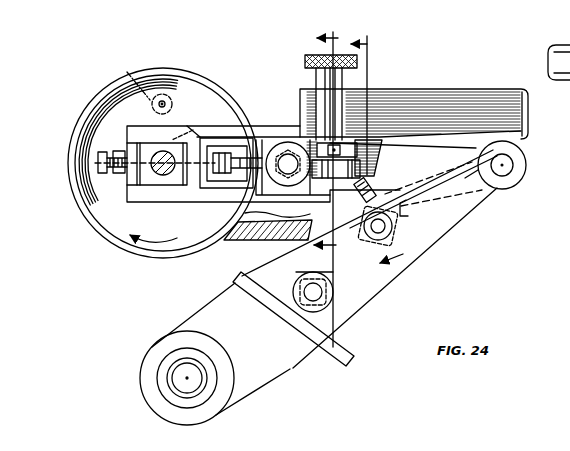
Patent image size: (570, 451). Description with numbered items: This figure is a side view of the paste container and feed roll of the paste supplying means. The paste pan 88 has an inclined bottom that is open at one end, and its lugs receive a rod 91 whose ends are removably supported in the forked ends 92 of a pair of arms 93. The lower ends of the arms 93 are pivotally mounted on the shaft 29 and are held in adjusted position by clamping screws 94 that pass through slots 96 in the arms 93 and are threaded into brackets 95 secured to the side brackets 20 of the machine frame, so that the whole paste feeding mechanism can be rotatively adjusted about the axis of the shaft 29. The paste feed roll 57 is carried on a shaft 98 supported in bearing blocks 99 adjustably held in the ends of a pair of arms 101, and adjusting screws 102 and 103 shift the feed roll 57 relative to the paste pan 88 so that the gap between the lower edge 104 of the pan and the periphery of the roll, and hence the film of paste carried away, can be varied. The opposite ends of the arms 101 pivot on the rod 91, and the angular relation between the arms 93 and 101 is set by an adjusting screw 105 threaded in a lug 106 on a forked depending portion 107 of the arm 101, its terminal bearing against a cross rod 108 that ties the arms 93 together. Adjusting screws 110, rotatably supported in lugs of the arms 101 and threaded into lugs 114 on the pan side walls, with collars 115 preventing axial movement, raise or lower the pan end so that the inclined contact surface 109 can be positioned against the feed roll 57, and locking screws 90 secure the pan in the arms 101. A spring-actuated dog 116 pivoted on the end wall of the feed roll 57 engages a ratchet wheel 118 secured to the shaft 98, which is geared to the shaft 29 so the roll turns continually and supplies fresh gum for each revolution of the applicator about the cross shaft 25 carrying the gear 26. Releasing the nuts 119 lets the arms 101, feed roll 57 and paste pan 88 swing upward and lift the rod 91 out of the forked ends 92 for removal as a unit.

The brackets 20 is at (343, 371).
The cross shaft 25 is at (327, 181).
The gear 26 is at (377, 155).
The shaft 29 is at (185, 378).
The paste feed roll 57 is at (142, 73).
The paste pan 88 is at (460, 107).
The locking screws 90 is at (283, 140).
The rod 91 is at (506, 170).
The forked ends 92 is at (512, 183).
The arms 93 is at (440, 228).
The clamping screws 94 is at (296, 36).
The brackets 95 is at (323, 326).
The slots 96 is at (300, 266).
The shaft 98 is at (128, 197).
The bearing blocks 99 is at (167, 148).
The arms 101 is at (150, 196).
The adjusting screw 102 is at (98, 157).
The adjusting screw 103 is at (230, 160).
The lower edge of the paste pan 104 is at (236, 286).
The adjusting screw 105 is at (383, 166).
The lug 106 is at (386, 180).
The depending portion 107 is at (362, 226).
The cross rod 108 is at (395, 238).
The inclined contact surface 109 is at (237, 240).
The adjusting screws 110 is at (306, 53).
The lugs 114 is at (362, 167).
The collars 115 is at (322, 147).
The spring-actuated dog 116 is at (133, 75).
The ratchet wheel 118 is at (193, 130).
The nuts 119 is at (402, 258).